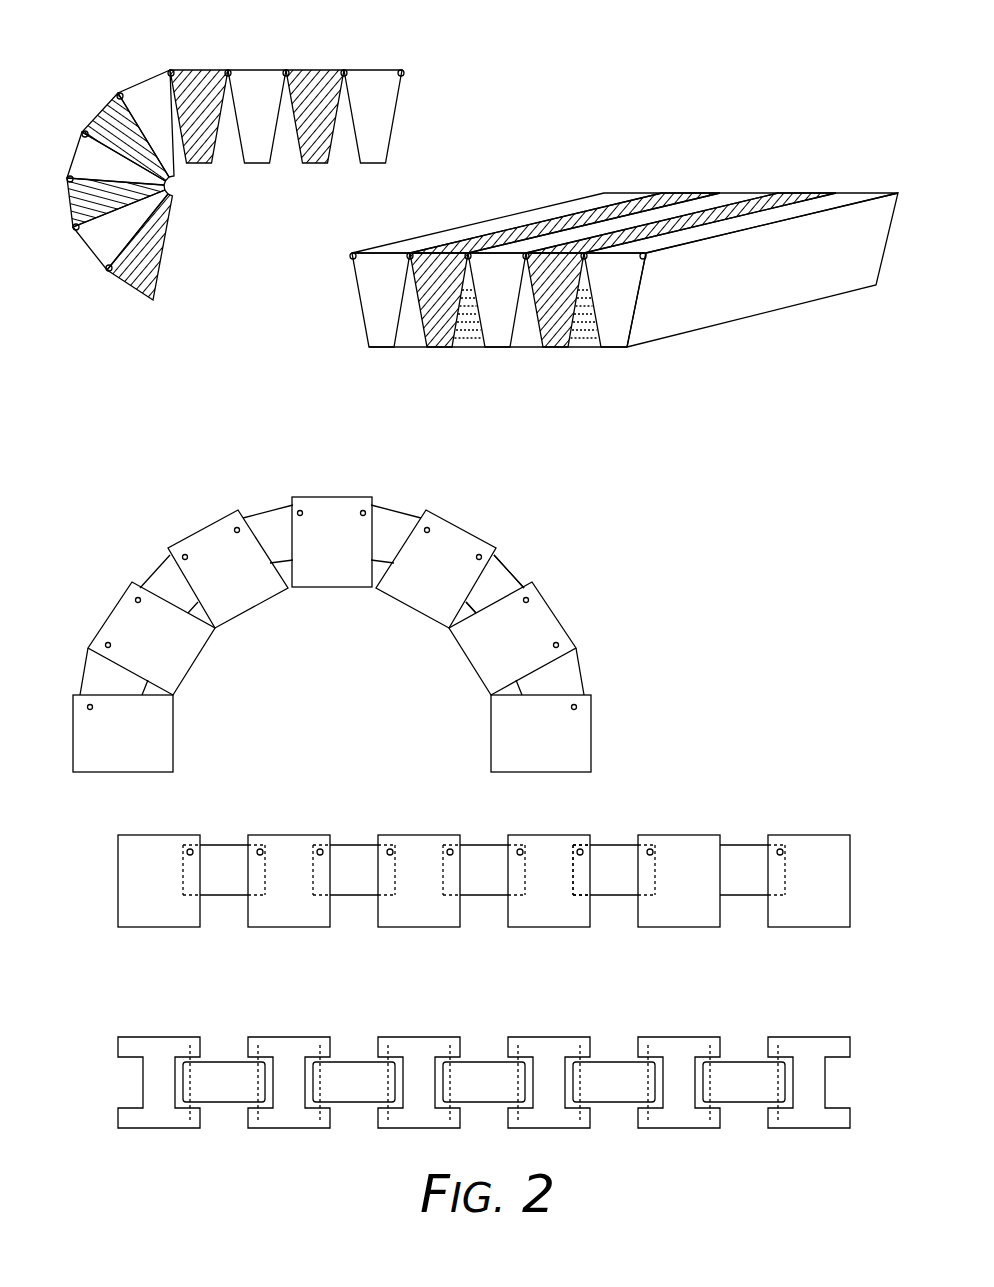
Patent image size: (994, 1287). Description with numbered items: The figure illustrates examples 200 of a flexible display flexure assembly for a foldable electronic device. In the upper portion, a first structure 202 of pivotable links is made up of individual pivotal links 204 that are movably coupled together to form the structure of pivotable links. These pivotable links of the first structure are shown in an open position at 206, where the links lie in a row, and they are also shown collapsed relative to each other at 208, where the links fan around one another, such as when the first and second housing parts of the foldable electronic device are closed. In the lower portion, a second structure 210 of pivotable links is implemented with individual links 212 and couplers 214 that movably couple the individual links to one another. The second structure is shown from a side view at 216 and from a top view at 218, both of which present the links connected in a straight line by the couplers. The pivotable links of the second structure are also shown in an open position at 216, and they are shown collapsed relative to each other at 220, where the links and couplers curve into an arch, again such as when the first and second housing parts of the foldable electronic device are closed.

The examples of a flexible display flexure assembly 200 is at (776, 73).
The first structure of pivotable links 202 is at (541, 131).
The pivotal links 204 is at (373, 128).
The open position 206 is at (400, 368).
The collapsed position 208 is at (222, 212).
The second structure of pivotable links 210 is at (645, 603).
The links 212 is at (470, 530).
The couplers 214 is at (512, 572).
The side view 216 is at (403, 812).
The top view 218 is at (354, 1019).
The collapsed position 220 is at (333, 655).